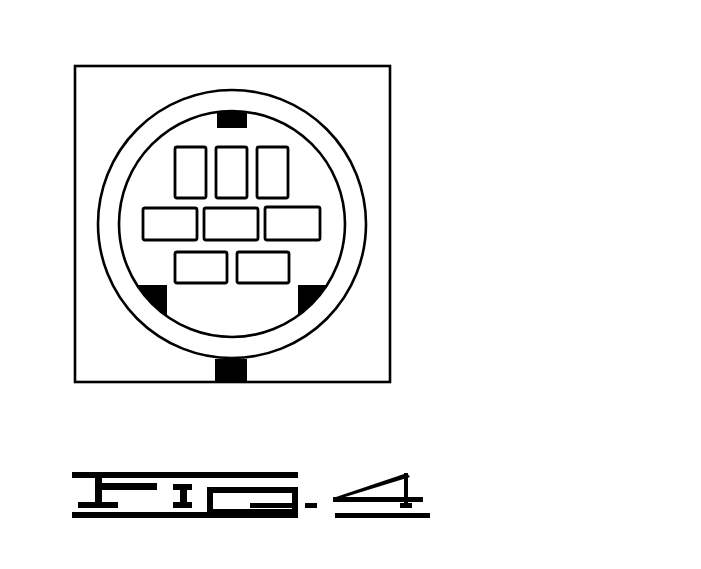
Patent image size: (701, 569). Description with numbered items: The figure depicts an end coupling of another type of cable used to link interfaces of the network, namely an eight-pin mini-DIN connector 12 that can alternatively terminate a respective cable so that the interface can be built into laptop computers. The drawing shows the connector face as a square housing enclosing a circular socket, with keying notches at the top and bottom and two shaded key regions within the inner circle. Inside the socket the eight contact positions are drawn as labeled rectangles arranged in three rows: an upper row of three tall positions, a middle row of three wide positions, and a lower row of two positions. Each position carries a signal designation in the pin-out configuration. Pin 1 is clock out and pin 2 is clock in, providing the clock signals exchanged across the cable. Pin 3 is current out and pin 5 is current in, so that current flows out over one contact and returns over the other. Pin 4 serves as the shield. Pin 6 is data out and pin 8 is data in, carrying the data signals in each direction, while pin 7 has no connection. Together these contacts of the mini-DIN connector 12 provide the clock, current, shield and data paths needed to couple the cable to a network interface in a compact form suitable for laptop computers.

The eight-pin mini-DIN connector 12 is at (390, 167).
The pin 1 is at (263, 268).
The pin 2 is at (201, 268).
The pin 3 is at (292, 224).
The pin 4 is at (231, 224).
The pin 5 is at (170, 224).
The pin 6 is at (272, 172).
The pin 7 is at (231, 172).
The pin 8 is at (190, 172).